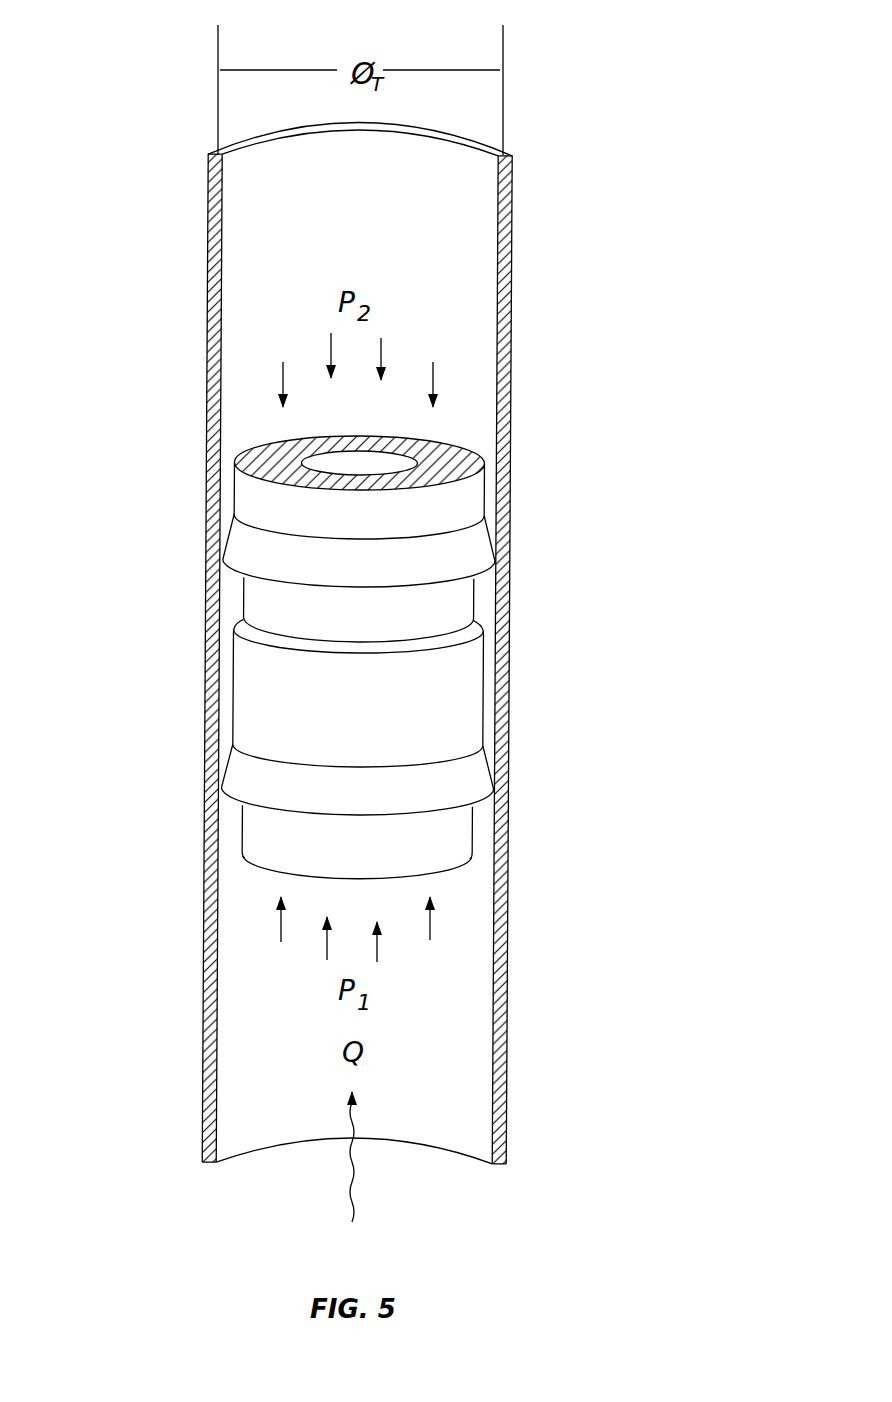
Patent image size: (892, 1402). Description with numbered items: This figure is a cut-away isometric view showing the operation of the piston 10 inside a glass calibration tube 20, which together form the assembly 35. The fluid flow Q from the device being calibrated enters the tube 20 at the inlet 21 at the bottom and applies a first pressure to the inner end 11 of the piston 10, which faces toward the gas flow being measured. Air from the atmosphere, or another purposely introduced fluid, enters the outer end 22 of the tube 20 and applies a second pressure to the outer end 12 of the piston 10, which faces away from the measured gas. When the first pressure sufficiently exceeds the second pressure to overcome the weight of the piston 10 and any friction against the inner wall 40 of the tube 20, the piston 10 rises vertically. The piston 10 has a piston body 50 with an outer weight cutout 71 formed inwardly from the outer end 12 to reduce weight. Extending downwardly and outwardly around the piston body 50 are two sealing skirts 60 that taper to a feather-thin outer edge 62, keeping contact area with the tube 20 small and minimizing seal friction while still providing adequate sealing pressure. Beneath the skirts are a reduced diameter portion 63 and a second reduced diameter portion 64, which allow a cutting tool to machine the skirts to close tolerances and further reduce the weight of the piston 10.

The piston 10 is at (268, 682).
The inner end 11 is at (448, 872).
The outer end 12 is at (463, 462).
The tube 20 is at (517, 312).
The inlet 21 is at (382, 1142).
The outer end of tube 22 is at (252, 180).
The assembly 35 is at (143, 347).
The inner wall 40 is at (494, 184).
The piston body 50 is at (483, 666).
The sealing skirt 60 is at (243, 548).
The outer edge of skirt 62 is at (483, 562).
The reduced diameter portion 63 is at (462, 602).
The second reduced diameter portion 64 is at (457, 845).
The outer weight cutout 71 is at (353, 464).